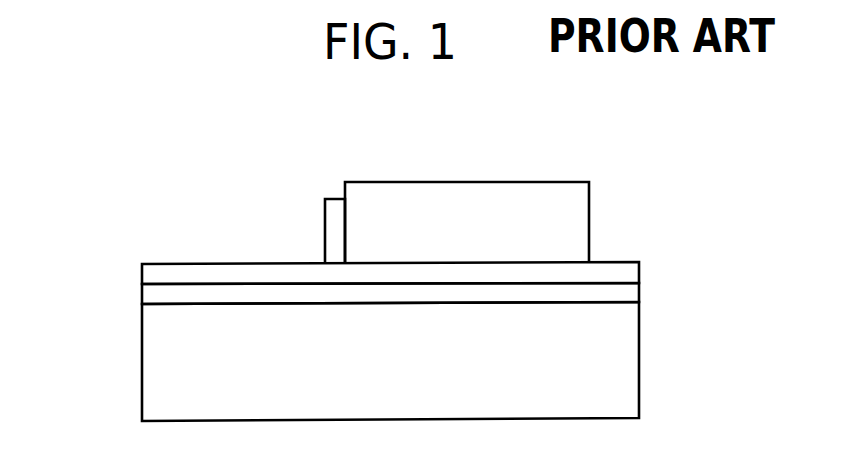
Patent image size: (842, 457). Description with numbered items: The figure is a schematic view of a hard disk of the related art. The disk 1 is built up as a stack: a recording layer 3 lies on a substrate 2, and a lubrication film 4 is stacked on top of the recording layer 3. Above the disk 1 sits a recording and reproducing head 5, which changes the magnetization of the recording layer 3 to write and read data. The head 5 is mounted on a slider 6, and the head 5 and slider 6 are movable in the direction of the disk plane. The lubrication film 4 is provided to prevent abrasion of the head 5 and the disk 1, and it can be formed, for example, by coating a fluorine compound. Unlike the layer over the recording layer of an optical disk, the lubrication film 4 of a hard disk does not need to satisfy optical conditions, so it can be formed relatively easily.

The disk 1 is at (182, 206).
The substrate 2 is at (151, 372).
The recording layer 3 is at (152, 297).
The lubrication film 4 is at (151, 276).
The recording and reproducing head 5 is at (326, 225).
The slider 6 is at (542, 202).